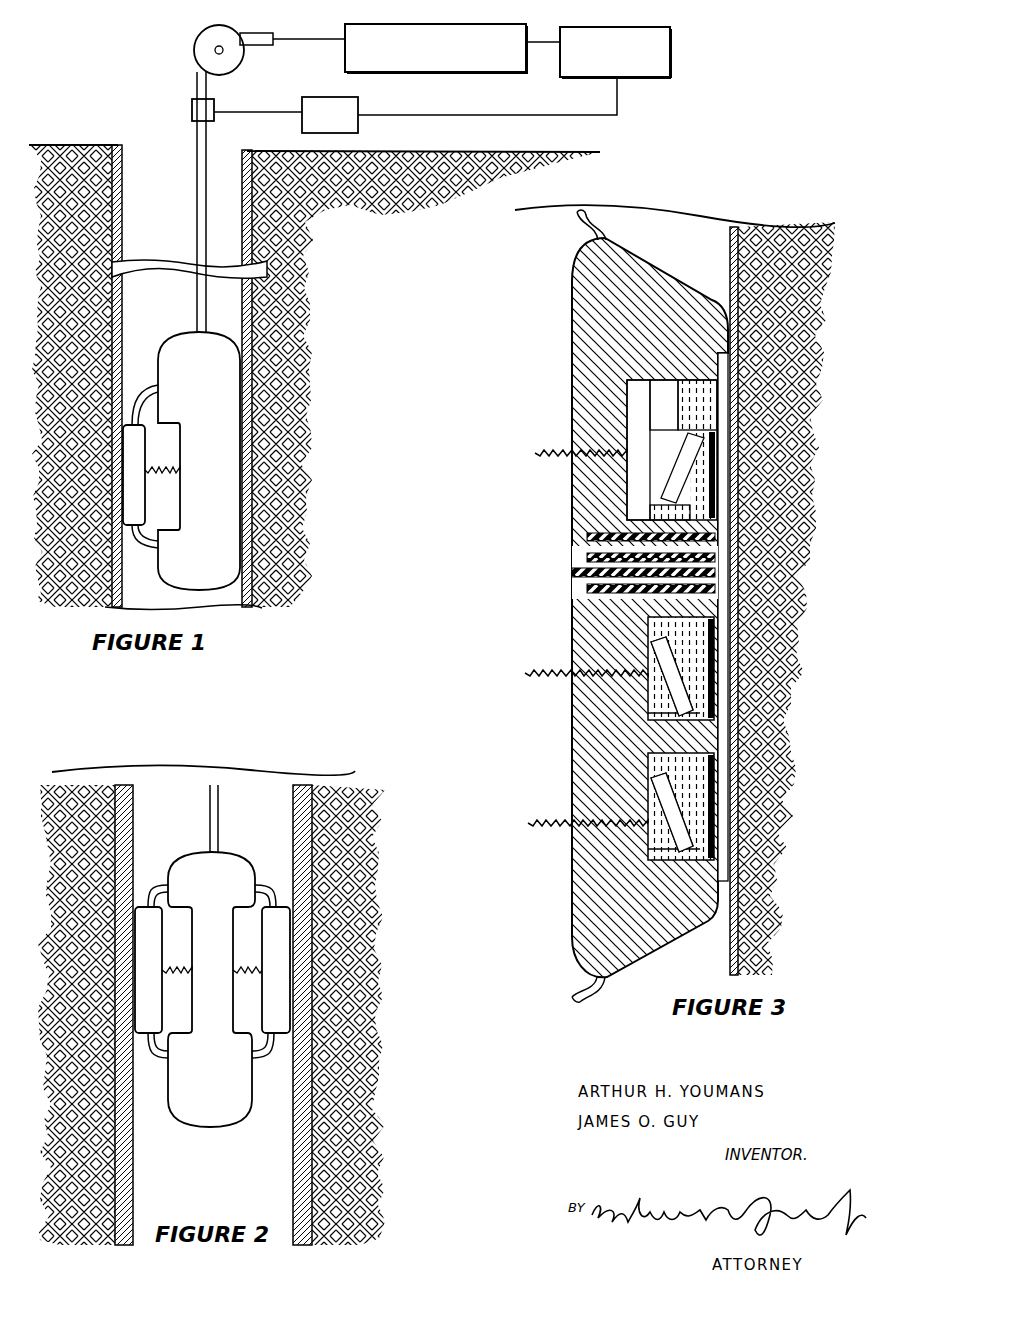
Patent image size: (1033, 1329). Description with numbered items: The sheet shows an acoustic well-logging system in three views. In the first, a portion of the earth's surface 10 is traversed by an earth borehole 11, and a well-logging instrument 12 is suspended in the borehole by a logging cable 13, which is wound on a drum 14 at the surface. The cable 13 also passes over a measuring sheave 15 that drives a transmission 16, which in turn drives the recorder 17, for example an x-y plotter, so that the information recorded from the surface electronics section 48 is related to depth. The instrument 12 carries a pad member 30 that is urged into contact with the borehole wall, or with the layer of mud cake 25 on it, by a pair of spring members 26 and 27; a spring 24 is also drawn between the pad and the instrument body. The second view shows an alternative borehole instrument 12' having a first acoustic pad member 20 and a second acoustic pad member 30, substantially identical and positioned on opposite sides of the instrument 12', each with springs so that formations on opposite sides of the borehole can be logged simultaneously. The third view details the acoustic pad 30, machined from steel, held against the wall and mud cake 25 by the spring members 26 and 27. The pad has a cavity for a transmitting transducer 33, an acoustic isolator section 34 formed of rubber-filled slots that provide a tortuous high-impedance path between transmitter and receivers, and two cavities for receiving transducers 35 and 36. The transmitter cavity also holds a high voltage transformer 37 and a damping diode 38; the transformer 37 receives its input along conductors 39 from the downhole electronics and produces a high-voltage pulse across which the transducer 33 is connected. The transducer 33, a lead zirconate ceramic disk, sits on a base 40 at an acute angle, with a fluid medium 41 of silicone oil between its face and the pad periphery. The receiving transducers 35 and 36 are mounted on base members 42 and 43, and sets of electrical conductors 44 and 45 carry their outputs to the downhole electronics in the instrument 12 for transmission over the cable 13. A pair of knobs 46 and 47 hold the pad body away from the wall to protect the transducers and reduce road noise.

In FIG. 1, the earth's surface 10 is at (95, 150).
In FIG. 1, the earth borehole 11 is at (160, 200).
In FIG. 1, the well-logging instrument 12 is at (254, 458).
In FIG. 2, the borehole instrument 12' is at (222, 973).
In FIG. 1, the logging cable 13 is at (207, 237).
In FIG. 2, the logging cable 13 is at (218, 803).
In FIG. 1, the drum 14 is at (234, 32).
In FIG. 1, the measuring sheave 15 is at (214, 102).
In FIG. 1, the transmission 16 is at (358, 100).
In FIG. 1, the recorder 17 is at (660, 43).
In FIG. 2, the first acoustic pad member 20 is at (280, 967).
In FIG. 1, the spring 24 is at (166, 474).
In FIG. 1, the mud cake 25 is at (125, 163).
In FIG. 2, the mud cake 25 is at (308, 790).
In FIG. 3, the mud cake 25 is at (737, 227).
In FIG. 1, the spring member 26 is at (140, 396).
In FIG. 3, the spring member 26 is at (594, 217).
In FIG. 1, the spring member 27 is at (138, 540).
In FIG. 3, the spring member 27 is at (596, 992).
In FIG. 1, the acoustic pad member 30 is at (130, 448).
In FIG. 2, the acoustic pad member 30 is at (145, 948).
In FIG. 3, the acoustic pad member 30 is at (563, 292).
In FIG. 3, the transmitting transducer 33 is at (690, 447).
In FIG. 3, the acoustic isolator section 34 is at (575, 560).
In FIG. 3, the receiving transducer 35 is at (680, 668).
In FIG. 3, the receiving transducer 36 is at (680, 800).
In FIG. 3, the high voltage transformer 37 is at (640, 385).
In FIG. 3, the damping diode 38 is at (632, 382).
In FIG. 3, the conductors 39 is at (564, 453).
In FIG. 3, the base 40 is at (668, 473).
In FIG. 3, the fluid medium 41 is at (692, 503).
In FIG. 3, the base member 42 is at (672, 695).
In FIG. 3, the base member 43 is at (672, 823).
In FIG. 3, the electrical conductors 44 is at (570, 673).
In FIG. 3, the electrical conductors 45 is at (571, 823).
In FIG. 3, the knob 46 is at (722, 328).
In FIG. 3, the knob 47 is at (715, 897).
In FIG. 1, the surface electronics section 48 is at (470, 25).